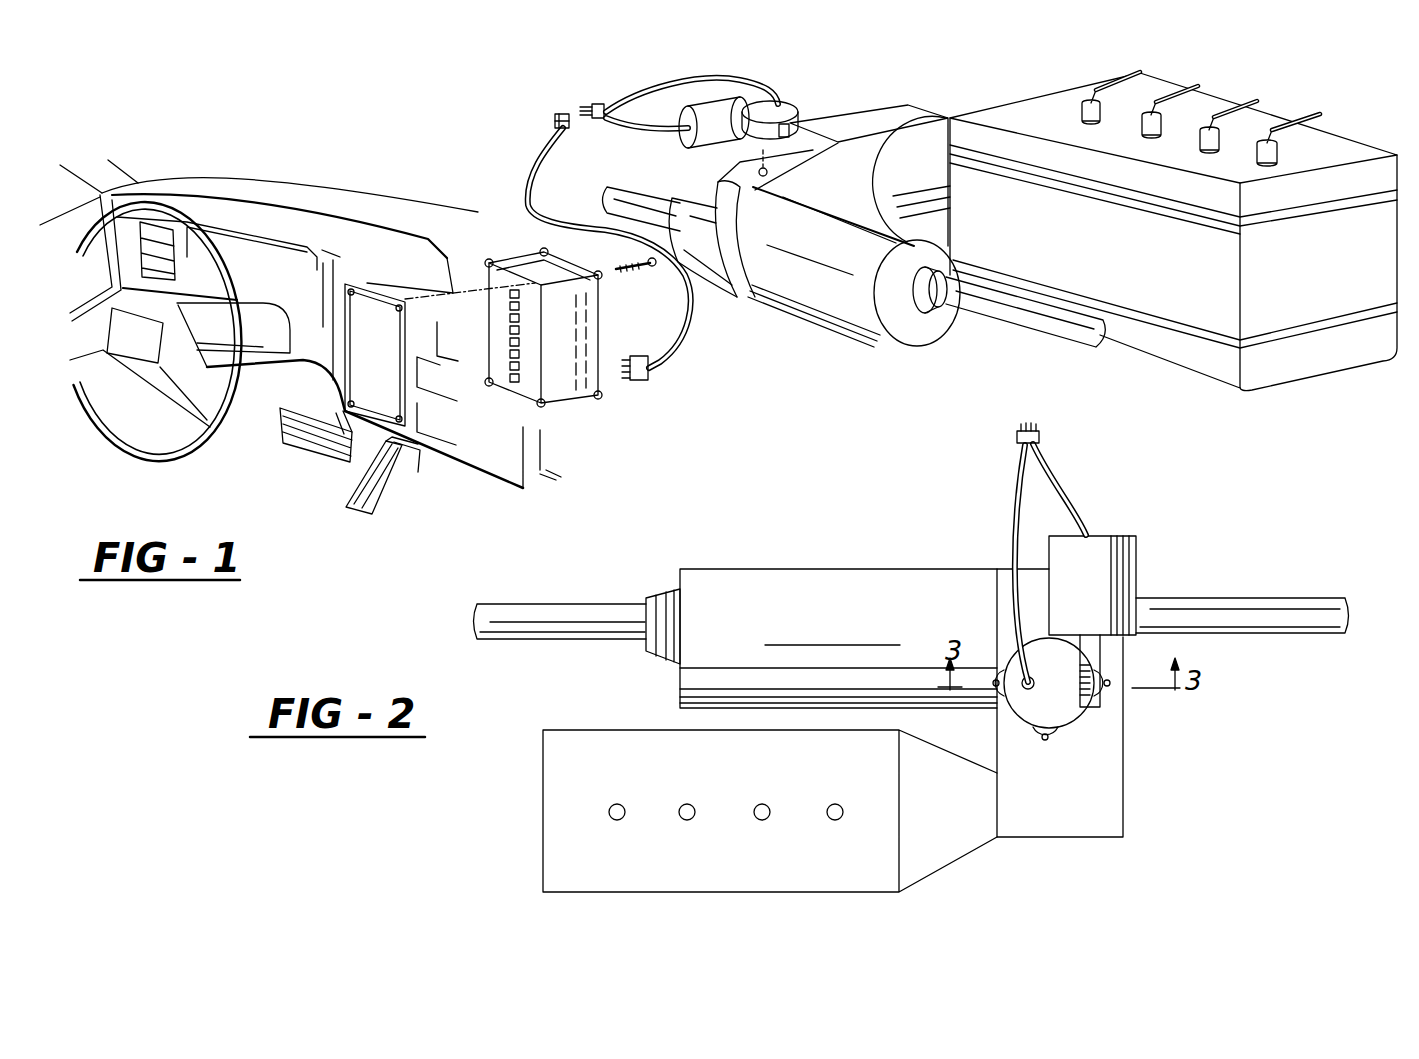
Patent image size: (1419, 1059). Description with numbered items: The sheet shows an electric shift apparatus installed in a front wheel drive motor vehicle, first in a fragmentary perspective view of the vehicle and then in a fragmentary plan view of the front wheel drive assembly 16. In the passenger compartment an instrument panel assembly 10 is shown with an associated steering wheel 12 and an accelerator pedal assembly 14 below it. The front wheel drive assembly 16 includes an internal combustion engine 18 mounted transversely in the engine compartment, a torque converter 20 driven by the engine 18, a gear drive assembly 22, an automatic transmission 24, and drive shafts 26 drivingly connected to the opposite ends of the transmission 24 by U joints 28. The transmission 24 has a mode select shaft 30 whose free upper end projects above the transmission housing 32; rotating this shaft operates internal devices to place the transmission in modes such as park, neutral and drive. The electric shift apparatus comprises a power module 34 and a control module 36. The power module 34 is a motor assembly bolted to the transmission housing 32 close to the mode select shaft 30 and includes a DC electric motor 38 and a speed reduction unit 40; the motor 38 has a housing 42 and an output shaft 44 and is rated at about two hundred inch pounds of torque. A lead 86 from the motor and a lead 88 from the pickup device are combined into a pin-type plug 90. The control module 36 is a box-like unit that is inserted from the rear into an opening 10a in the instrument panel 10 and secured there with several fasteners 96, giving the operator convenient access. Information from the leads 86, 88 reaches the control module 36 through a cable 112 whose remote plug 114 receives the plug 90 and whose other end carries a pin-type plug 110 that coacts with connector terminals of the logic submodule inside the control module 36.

In FIG. 1, the instrument panel assembly 10 is at (347, 198).
In FIG. 1, the opening 10a is at (397, 330).
In FIG. 1, the steering wheel 12 is at (133, 450).
In FIG. 1, the accelerator pedal assembly 14 is at (352, 512).
In FIG. 1, the front wheel drive assembly 16 is at (1013, 96).
In FIG. 1, the internal combustion engine 18 is at (1349, 133).
In FIG. 2, the internal combustion engine 18 is at (542, 812).
In FIG. 1, the torque converter 20 is at (905, 178).
In FIG. 1, the gear drive assembly 22 is at (880, 114).
In FIG. 2, the gear drive assembly 22 is at (1075, 838).
In FIG. 1, the automatic transmission 24 is at (814, 243).
In FIG. 2, the automatic transmission 24 is at (838, 614).
In FIG. 1, the drive shafts 26 is at (625, 192).
In FIG. 2, the drive shafts 26 is at (575, 602).
In FIG. 1, the U joints 28 is at (930, 314).
In FIG. 2, the U joints 28 is at (660, 588).
In FIG. 1, the mode select shaft 30 is at (756, 168).
In FIG. 1, the transmission housing 32 is at (852, 262).
In FIG. 2, the transmission housing 32 is at (832, 623).
In FIG. 1, the power module 34 is at (776, 98).
In FIG. 1, the control module 36 is at (566, 396).
In FIG. 1, the DC electric motor 38 is at (712, 114).
In FIG. 2, the DC electric motor 38 is at (1140, 576).
In FIG. 1, the speed reduction unit 40 is at (798, 100).
In FIG. 2, the speed reduction unit 40 is at (1085, 727).
In FIG. 2, the motor housing 42 is at (1100, 590).
In FIG. 2, the output shaft 44 is at (1110, 660).
In FIG. 1, the lead 86 is at (628, 128).
In FIG. 2, the lead 86 is at (1086, 525).
In FIG. 1, the lead 88 is at (698, 70).
In FIG. 2, the lead 88 is at (1013, 515).
In FIG. 1, the pin-type plug 90 is at (595, 103).
In FIG. 2, the pin-type plug 90 is at (1042, 436).
In FIG. 1, the fasteners 96 is at (640, 273).
In FIG. 1, the pin-type plug 110 is at (650, 376).
In FIG. 1, the cable 112 is at (528, 170).
In FIG. 1, the plug 114 is at (558, 112).